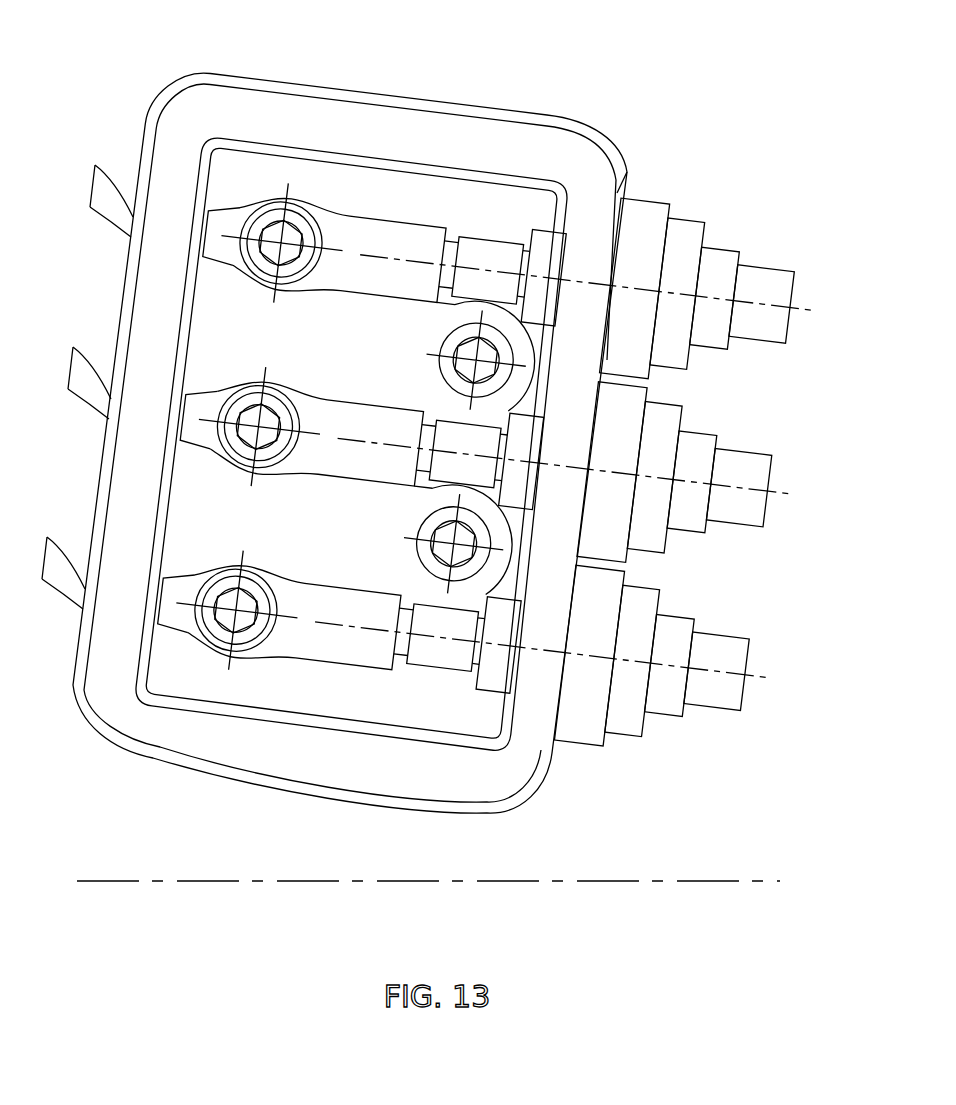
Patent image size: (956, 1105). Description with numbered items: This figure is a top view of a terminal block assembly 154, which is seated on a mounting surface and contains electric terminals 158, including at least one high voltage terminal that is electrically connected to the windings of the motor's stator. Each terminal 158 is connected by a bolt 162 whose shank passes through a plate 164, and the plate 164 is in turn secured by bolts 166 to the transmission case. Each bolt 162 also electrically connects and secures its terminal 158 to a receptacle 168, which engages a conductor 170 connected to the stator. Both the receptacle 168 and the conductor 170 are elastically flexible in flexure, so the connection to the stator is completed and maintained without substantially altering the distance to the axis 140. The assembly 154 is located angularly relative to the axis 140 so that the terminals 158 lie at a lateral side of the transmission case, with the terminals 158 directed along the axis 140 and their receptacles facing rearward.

The axis 140 is at (681, 884).
The terminal block assembly 154 is at (634, 57).
The electric terminals 158 is at (777, 285).
The bolt 162 is at (294, 222).
The plate 164 is at (371, 355).
The bolts 166 is at (600, 390).
The receptacle 168 is at (227, 220).
The conductor 170 is at (102, 197).